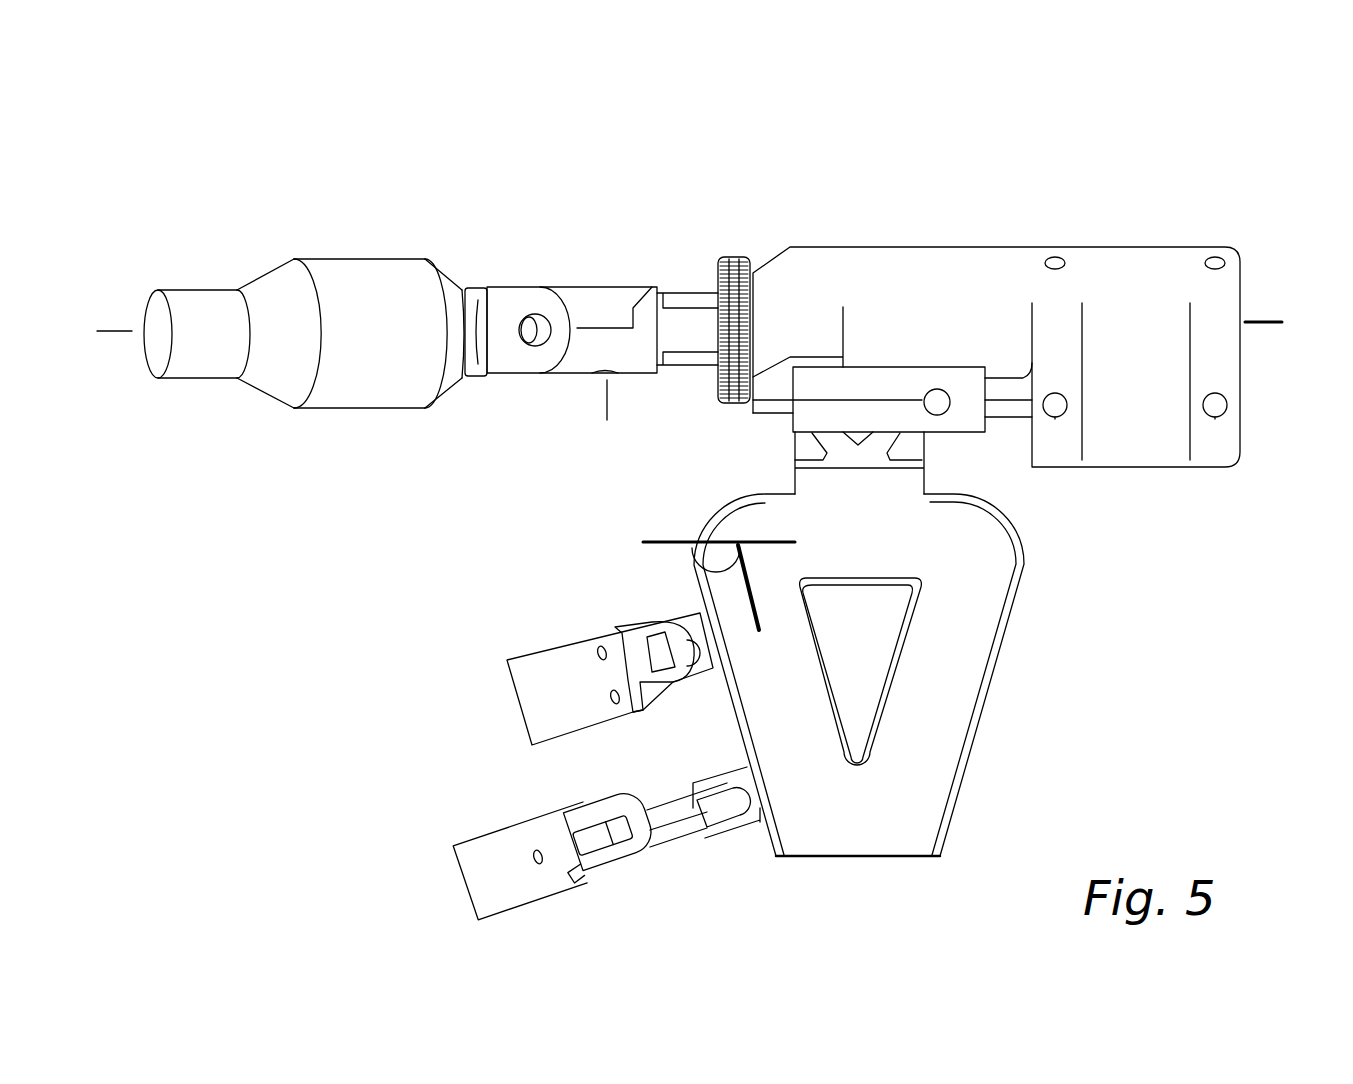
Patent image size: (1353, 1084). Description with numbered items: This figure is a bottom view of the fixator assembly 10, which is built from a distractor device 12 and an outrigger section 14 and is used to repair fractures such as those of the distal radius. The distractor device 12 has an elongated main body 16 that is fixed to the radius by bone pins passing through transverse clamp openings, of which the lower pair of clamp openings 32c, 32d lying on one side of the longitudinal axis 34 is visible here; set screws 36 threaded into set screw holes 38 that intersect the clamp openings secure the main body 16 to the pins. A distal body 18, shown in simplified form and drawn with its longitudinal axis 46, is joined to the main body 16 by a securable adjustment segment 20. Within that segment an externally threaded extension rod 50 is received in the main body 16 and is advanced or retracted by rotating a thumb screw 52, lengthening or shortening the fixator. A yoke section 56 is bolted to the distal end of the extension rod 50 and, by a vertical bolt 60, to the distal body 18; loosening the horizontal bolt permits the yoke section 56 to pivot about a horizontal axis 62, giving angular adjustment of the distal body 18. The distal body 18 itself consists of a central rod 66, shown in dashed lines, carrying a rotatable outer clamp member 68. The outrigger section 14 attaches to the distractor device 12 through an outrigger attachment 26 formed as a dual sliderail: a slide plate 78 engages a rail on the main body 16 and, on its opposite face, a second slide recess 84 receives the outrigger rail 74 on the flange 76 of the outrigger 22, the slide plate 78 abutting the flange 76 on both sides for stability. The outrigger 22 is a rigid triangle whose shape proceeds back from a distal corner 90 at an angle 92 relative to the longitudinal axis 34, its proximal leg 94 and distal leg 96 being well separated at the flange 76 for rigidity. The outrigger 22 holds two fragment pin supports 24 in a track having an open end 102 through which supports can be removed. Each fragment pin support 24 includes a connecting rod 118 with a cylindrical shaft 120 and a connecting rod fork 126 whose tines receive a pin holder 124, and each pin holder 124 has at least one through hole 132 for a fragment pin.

The fixator assembly 10 is at (296, 156).
The distractor device 12 is at (473, 230).
The outrigger section 14 is at (788, 868).
The main body 16 is at (967, 262).
The distal body 18 is at (333, 268).
The securable adjustment segment 20 is at (617, 266).
The outrigger 22 is at (986, 649).
The fragment pin support 24 is at (627, 622).
The outrigger attachment 26 is at (712, 437).
The clamp opening 32c is at (1060, 258).
The clamp opening 32d is at (1221, 256).
The longitudinal axis 34 is at (1262, 318).
The set screw 36 is at (1223, 405).
The set screw hole 38 is at (1057, 418).
The longitudinal axis 46 is at (116, 331).
The extension rod 50 is at (683, 318).
The thumb screw 52 is at (735, 258).
The yoke section 56 is at (587, 303).
The vertical bolt 60 is at (527, 316).
The horizontal axis 62 is at (607, 398).
The central rod 66 is at (500, 362).
The outer clamp member 68 is at (356, 394).
The outrigger rail 74 is at (883, 443).
The outrigger flange 76 is at (873, 460).
The slide plate 78 is at (853, 415).
The second slide recess 84 is at (877, 430).
The distal corner 90 is at (746, 510).
The angle 92 is at (716, 578).
The proximal leg 94 is at (950, 732).
The distal leg 96 is at (793, 677).
The open end 102 is at (873, 857).
The connecting rod 118 is at (673, 810).
The cylindrical shaft 120 is at (673, 832).
The pin holder 124 is at (530, 660).
The connecting rod fork 126 is at (647, 630).
The through hole 132 is at (596, 648).